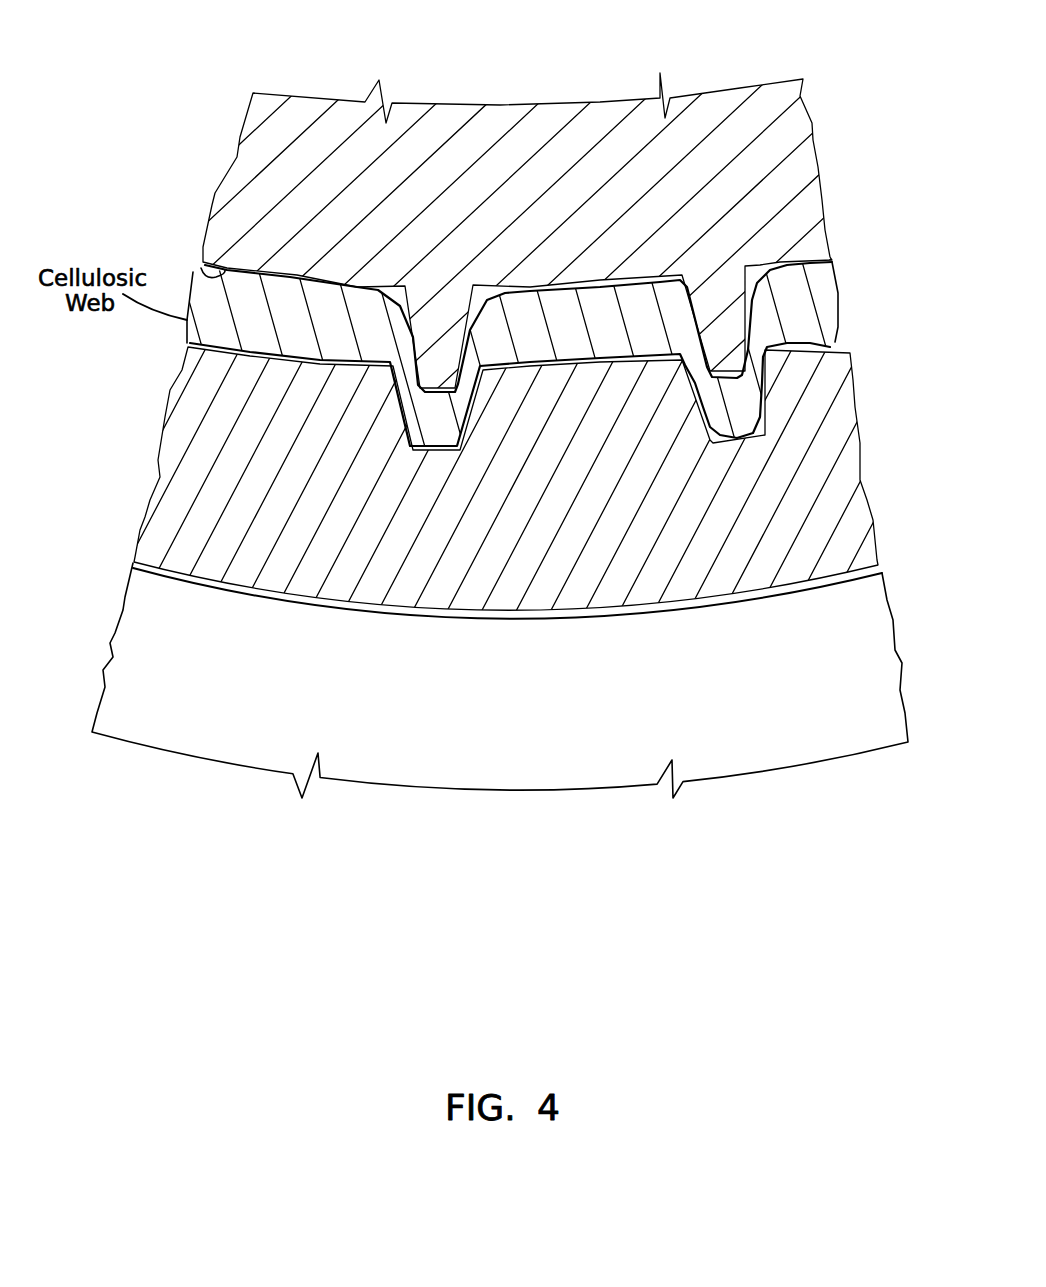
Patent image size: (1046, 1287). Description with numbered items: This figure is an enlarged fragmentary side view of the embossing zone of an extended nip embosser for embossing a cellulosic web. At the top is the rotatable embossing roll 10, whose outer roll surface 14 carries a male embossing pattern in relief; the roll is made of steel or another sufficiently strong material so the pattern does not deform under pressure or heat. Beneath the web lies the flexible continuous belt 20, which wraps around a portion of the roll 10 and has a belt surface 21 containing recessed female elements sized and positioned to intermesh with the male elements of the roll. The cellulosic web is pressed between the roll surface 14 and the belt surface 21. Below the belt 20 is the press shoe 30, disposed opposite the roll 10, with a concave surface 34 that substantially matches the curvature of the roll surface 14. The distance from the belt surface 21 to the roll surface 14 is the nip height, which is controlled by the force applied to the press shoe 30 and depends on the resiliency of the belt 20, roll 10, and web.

The embossing roll 10 is at (798, 125).
The roll outer surface 14 is at (208, 267).
The flexible continuous belt 20 is at (843, 433).
The belt surface 21 is at (788, 346).
The press shoe 30 is at (112, 652).
The concave surface 34 is at (187, 580).